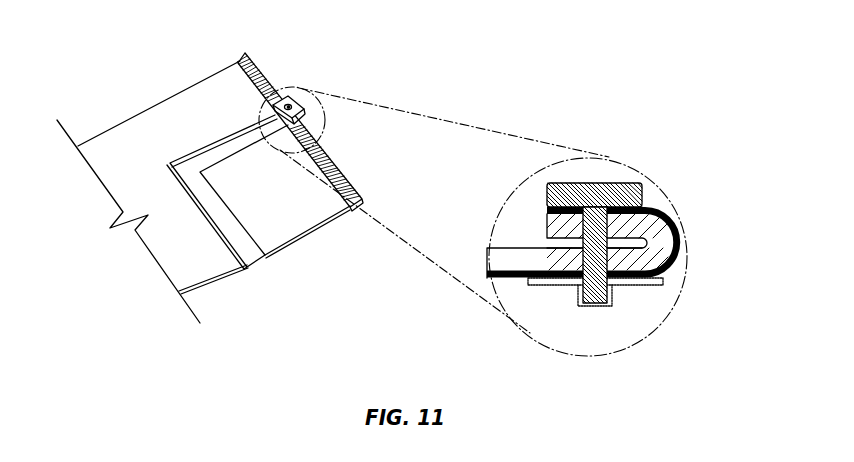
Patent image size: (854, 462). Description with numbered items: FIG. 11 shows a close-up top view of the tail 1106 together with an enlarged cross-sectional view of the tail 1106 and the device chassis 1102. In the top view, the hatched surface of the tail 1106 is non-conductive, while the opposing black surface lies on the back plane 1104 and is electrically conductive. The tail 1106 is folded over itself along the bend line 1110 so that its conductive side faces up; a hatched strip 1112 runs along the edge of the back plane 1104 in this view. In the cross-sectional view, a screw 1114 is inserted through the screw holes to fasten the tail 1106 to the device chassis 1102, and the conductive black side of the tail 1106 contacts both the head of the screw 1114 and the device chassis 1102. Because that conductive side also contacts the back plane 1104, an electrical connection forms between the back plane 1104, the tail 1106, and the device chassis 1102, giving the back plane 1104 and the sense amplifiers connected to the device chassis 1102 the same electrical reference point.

The device chassis 1102 is at (607, 303).
The back plane 1104 is at (300, 213).
The tail 1106 is at (254, 252).
The bend line 1110 is at (305, 106).
The hatched strip 1112 is at (277, 98).
The screw 1114 is at (607, 183).